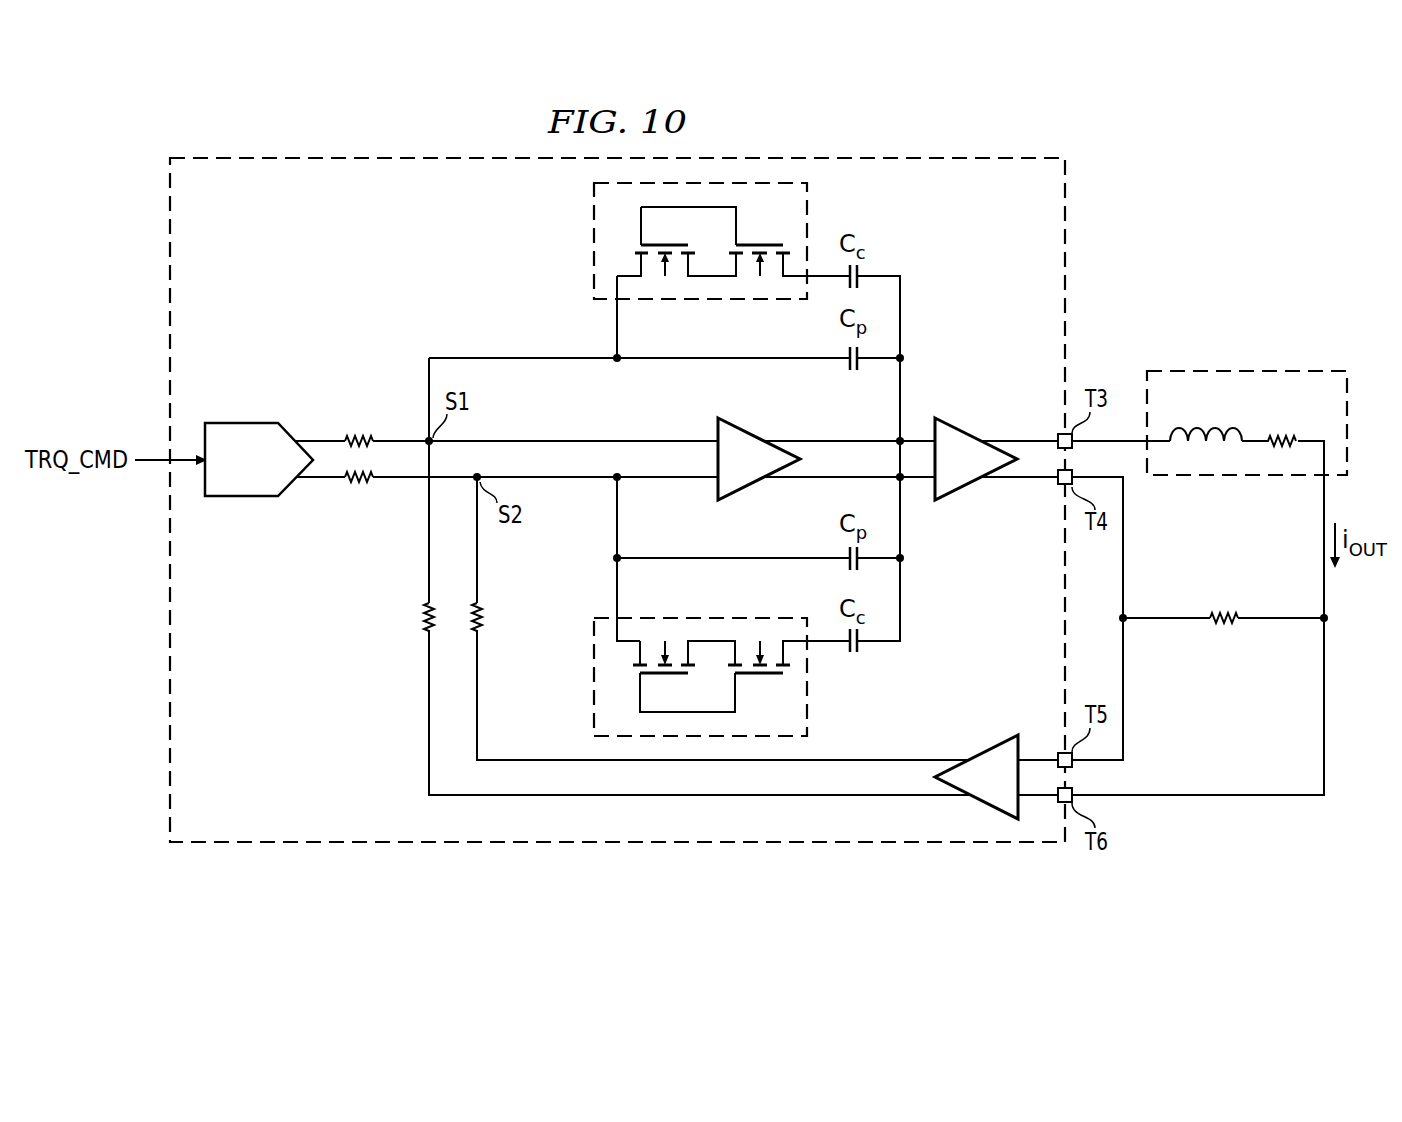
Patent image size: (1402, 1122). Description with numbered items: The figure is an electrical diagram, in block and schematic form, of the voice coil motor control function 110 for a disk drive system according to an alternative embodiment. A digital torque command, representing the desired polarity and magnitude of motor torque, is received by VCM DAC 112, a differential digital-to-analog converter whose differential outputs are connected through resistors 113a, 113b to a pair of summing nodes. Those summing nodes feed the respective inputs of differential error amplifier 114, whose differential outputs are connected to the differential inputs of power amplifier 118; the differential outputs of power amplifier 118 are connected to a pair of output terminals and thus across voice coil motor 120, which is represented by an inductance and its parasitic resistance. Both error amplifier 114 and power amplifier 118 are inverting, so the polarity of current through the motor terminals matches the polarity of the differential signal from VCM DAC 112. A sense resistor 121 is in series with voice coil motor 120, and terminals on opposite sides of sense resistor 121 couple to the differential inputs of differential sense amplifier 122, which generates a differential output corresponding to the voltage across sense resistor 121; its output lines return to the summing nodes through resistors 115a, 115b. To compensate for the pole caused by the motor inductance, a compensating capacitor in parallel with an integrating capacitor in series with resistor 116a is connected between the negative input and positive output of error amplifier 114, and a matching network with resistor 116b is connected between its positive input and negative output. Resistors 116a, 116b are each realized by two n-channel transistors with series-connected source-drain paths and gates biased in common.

The voice coil motor control function 110 is at (162, 277).
The VCM DAC 112 is at (240, 498).
The resistor 113a is at (362, 432).
The resistor 113b is at (357, 483).
The differential error amplifier 114 is at (745, 424).
The resistor 115a is at (425, 615).
The resistor 115b is at (483, 620).
The resistor 116a is at (585, 231).
The resistor 116b is at (820, 689).
The power amplifier 118 is at (962, 424).
The voice coil motor 120 is at (1260, 362).
The sense resistor 121 is at (1222, 627).
The differential sense amplifier 122 is at (993, 745).